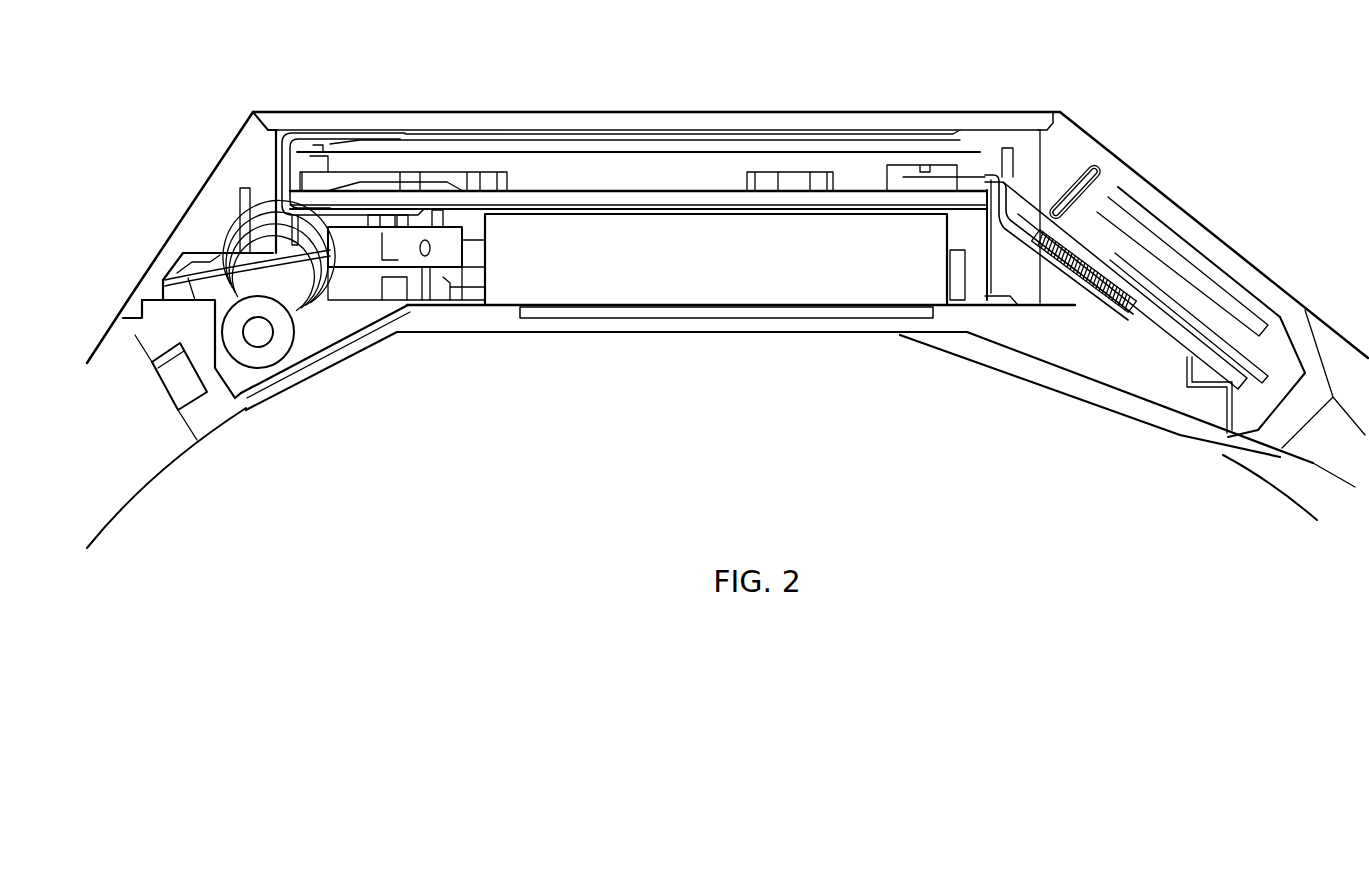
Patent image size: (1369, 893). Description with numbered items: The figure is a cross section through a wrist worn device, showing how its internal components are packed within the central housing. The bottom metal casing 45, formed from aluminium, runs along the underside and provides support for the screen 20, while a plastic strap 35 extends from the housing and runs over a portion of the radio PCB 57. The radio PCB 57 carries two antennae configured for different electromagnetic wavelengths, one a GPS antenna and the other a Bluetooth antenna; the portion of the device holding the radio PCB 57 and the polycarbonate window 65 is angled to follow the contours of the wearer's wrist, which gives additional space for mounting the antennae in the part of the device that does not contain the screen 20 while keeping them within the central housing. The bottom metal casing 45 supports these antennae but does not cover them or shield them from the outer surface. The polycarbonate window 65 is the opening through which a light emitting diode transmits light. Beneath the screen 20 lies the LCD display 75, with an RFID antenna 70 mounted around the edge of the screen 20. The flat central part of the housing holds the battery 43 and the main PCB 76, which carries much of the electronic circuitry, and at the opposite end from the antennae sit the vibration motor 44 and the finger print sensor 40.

The screen 20 is at (600, 128).
The plastic strap 35 is at (1302, 311).
The finger print sensor 40 is at (229, 274).
The battery 43 is at (687, 270).
The vibration motor 44 is at (259, 352).
The bottom metal casing 45 is at (225, 200).
The radio PCB board 57 is at (1131, 285).
The polycarbonate window 65 is at (1211, 233).
The RFID antenna 70 is at (1003, 133).
The LCD display 75 is at (703, 141).
The main PCB 76 is at (586, 195).